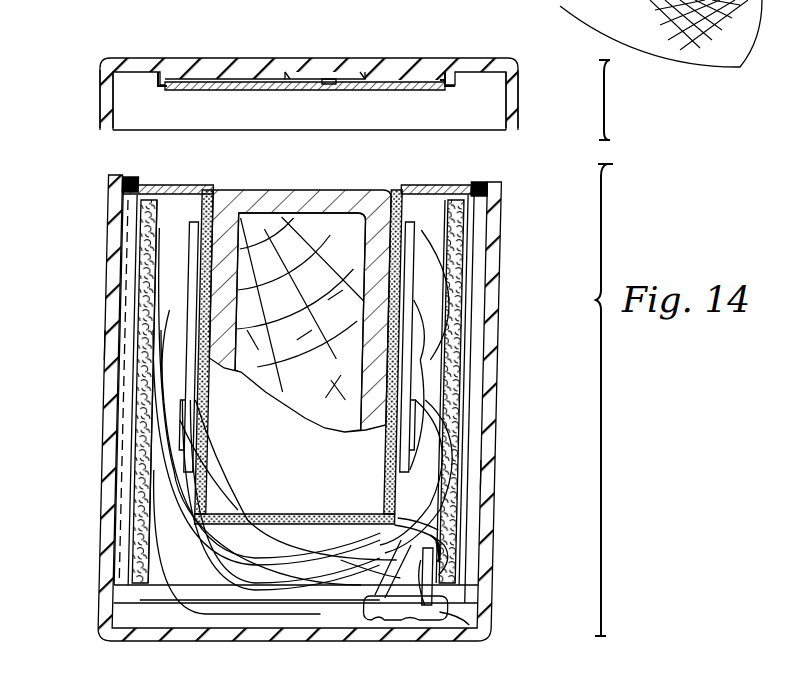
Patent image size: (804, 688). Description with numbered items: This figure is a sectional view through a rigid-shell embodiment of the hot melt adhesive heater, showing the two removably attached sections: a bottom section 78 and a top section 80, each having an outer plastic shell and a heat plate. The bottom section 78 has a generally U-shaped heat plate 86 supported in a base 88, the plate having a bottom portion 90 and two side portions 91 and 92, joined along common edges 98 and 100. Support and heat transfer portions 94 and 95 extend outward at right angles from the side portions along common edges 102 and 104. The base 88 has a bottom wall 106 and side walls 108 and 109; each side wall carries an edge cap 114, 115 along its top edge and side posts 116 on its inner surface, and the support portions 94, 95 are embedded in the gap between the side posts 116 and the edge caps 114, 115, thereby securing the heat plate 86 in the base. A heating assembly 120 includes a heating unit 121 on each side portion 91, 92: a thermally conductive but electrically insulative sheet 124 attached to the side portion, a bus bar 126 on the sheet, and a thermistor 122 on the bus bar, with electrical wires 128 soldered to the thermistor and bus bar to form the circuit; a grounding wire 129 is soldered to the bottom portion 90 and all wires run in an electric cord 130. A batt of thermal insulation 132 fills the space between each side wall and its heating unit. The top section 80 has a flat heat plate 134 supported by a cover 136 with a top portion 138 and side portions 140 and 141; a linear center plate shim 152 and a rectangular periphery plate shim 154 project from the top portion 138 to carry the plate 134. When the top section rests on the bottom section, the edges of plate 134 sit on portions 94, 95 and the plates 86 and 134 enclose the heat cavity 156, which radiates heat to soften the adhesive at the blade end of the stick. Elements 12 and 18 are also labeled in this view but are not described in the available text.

The container body 12 is at (274, 192).
The sample chamber 18 is at (348, 210).
The bottom section 78 is at (512, 452).
The top section 80 is at (88, 54).
The U-shaped heat plate 86 is at (425, 502).
The base 88 is at (448, 538).
The bottom heat plate portion 90 is at (286, 640).
The side heat plate portion 91 is at (445, 522).
The side heat plate portion 92 is at (190, 470).
The support and heat transfer portion 94 is at (478, 190).
The support and heat transfer portion 95 is at (162, 185).
The common edge 98 is at (446, 550).
The common edge 100 is at (194, 642).
The common edge 102 is at (392, 192).
The common edge 104 is at (206, 192).
The bottom wall 106 is at (306, 642).
The side wall 108 is at (170, 388).
The side wall 109 is at (496, 342).
The edge cap 114 is at (110, 180).
The edge cap 115 is at (490, 186).
The side post 116 is at (113, 344).
The heating assembly 120 is at (448, 638).
The heating unit 121 is at (178, 424).
The thermistor 122 is at (192, 232).
The thermally conductive electric insulative sheet 124 is at (128, 212).
The bus bar 126 is at (150, 228).
The electrical wires 128 is at (366, 616).
The grounding wire 129 is at (446, 568).
The electric cord 130 is at (468, 622).
The batt of thermal insulation 132 is at (150, 300).
The flat heat plate 134 is at (338, 70).
The cover 136 is at (262, 64).
The top portion 138 is at (300, 66).
The side portion 140 is at (100, 86).
The side portion 141 is at (518, 118).
The linear center plate shim 152 is at (328, 74).
The rectangular periphery plate shim 154 is at (162, 80).
The heat cavity 156 is at (318, 455).